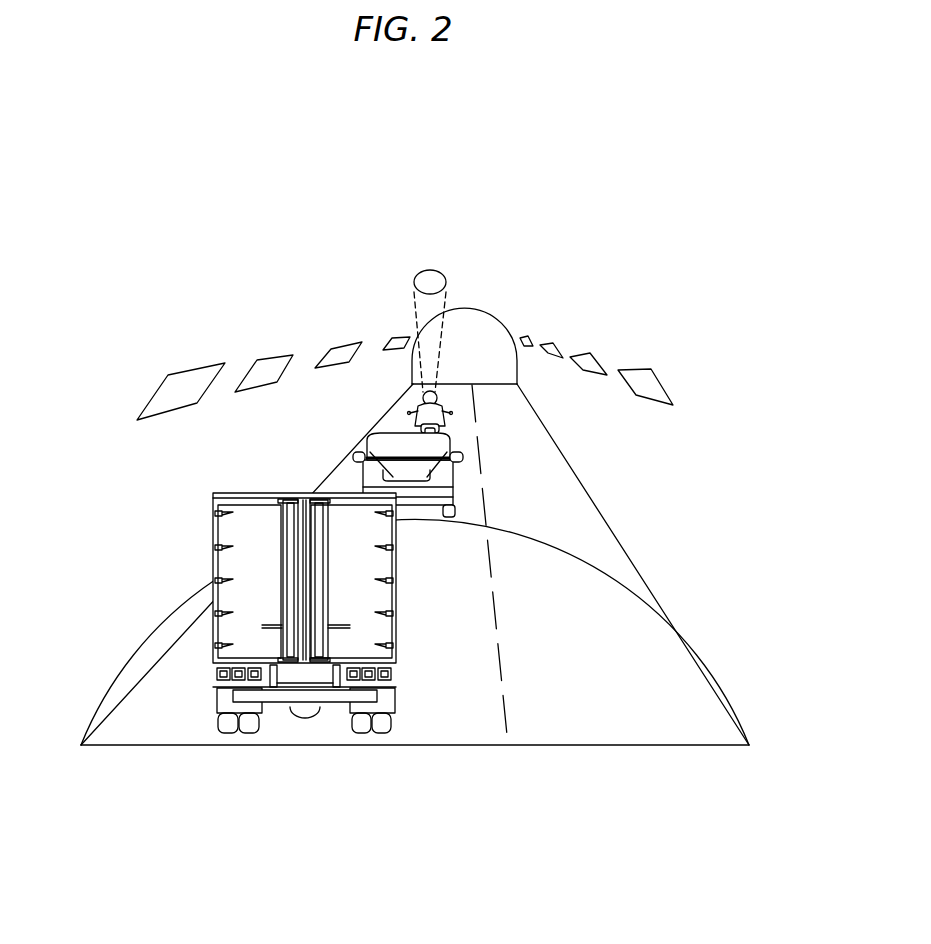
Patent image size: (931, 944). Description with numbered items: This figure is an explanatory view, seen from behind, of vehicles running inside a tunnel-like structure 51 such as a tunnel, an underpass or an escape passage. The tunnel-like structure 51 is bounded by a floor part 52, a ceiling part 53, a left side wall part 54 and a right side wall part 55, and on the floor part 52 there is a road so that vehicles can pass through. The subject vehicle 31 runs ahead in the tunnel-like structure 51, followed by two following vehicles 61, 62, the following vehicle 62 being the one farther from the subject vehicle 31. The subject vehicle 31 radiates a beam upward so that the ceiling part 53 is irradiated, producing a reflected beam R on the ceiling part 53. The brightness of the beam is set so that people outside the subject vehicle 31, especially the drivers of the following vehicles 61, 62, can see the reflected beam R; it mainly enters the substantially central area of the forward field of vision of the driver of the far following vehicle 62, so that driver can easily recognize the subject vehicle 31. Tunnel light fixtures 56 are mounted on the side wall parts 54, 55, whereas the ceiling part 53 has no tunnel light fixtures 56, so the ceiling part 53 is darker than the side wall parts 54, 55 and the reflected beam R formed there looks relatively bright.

The tunnel-like structure 51 is at (580, 285).
The floor part 52 is at (447, 731).
The ceiling part 53 is at (332, 281).
The left side wall part 54 is at (97, 661).
The right side wall part 55 is at (743, 648).
The tunnel light fixtures 56 is at (196, 371).
The reflected beam R is at (448, 280).
The subject vehicle 31 is at (415, 406).
The following vehicle 61 is at (390, 431).
The following vehicle 62 is at (257, 492).